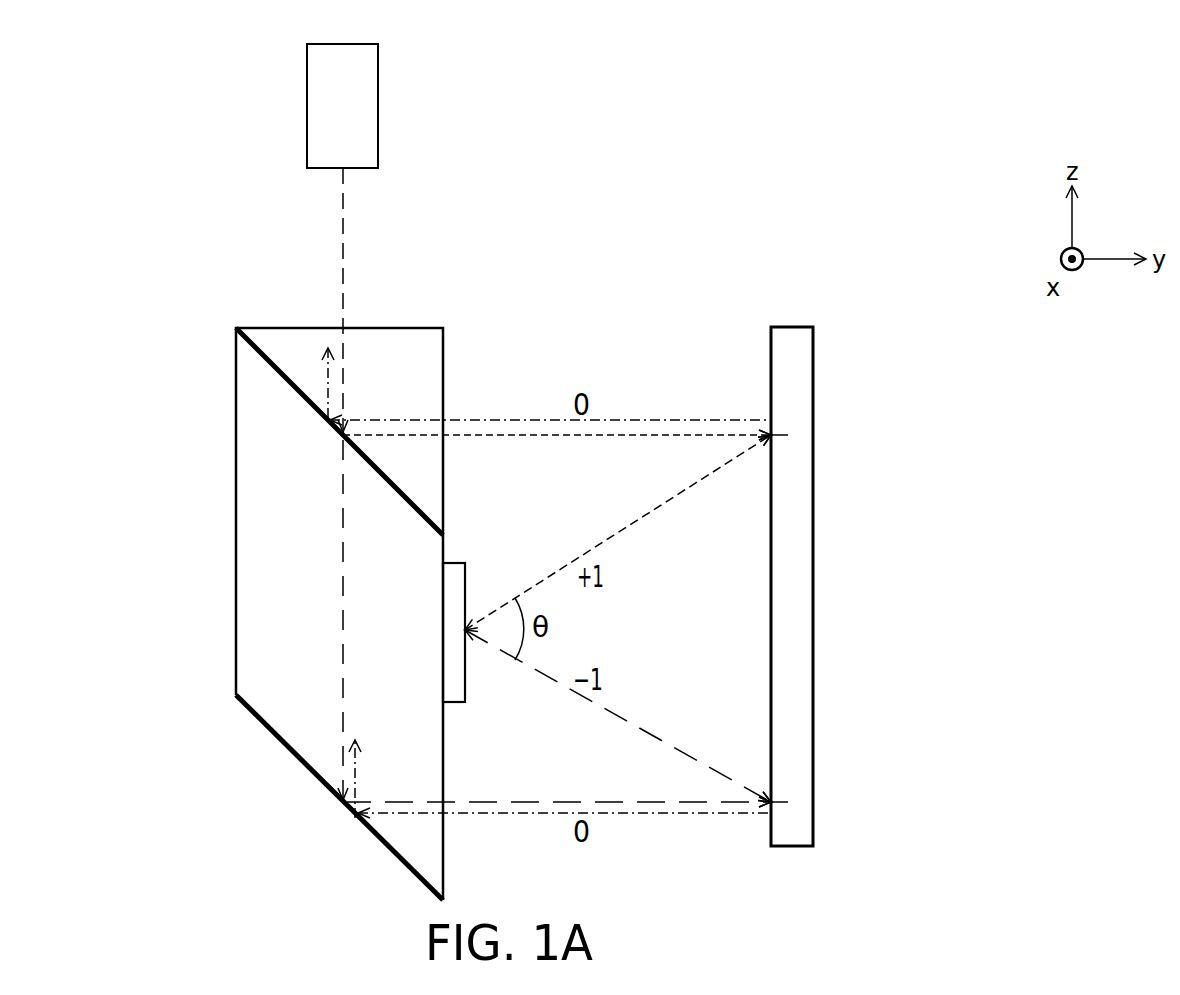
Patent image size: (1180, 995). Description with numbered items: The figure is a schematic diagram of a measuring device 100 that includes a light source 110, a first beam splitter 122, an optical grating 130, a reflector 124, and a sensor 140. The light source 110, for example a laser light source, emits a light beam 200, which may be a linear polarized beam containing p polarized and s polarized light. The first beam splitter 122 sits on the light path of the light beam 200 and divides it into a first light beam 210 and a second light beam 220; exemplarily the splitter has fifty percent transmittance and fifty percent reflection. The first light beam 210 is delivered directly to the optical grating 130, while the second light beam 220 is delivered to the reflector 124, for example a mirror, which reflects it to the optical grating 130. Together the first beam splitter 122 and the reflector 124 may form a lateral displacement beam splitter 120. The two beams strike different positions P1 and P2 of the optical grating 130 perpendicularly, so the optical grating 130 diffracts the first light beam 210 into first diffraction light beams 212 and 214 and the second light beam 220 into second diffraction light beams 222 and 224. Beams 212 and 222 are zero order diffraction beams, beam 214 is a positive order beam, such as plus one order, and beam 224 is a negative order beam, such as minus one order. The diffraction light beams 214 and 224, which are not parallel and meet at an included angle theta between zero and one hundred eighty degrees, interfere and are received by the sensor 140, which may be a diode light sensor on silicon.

The measuring device 100 is at (927, 904).
The light source 110 is at (314, 109).
The lateral displacement beam splitter 120 is at (244, 566).
The first beam splitter 122 is at (269, 368).
The reflector 124 is at (383, 845).
The optical grating 130 is at (814, 575).
The sensor 140 is at (453, 572).
The light beam 200 is at (345, 241).
The first light beam 210 is at (551, 437).
The zero order diffraction light beam 212 is at (627, 419).
The positive integer order diffraction light beam 214 is at (665, 502).
The second light beam 220 is at (548, 800).
The zero order diffraction light beam 222 is at (652, 815).
The negative integer order diffraction light beam 224 is at (660, 735).
The position P1 is at (776, 437).
The position P2 is at (776, 804).